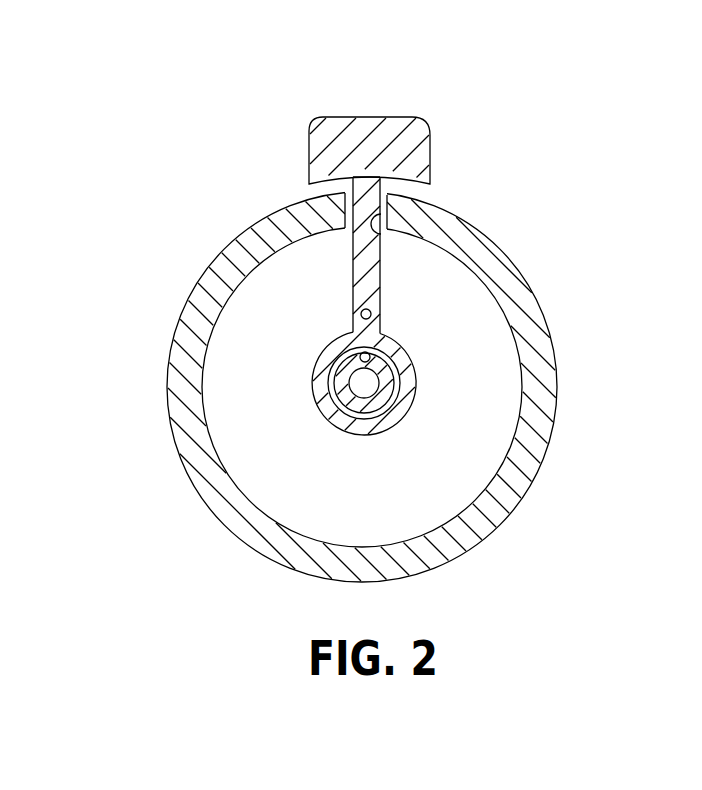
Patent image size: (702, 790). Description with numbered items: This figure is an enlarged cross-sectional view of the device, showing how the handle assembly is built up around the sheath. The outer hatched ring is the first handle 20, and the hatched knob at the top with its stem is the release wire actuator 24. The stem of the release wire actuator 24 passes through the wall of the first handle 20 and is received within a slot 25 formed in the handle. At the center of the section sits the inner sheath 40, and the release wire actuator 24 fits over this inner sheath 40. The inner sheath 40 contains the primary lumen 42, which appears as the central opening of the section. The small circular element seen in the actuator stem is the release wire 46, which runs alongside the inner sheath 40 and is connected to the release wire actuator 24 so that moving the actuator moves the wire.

The first handle 20 is at (552, 342).
The release wire actuator 24 is at (383, 104).
The slot 25 is at (386, 239).
The inner sheath 40 is at (351, 433).
The primary lumen 42 is at (393, 352).
The release wire 46 is at (345, 305).